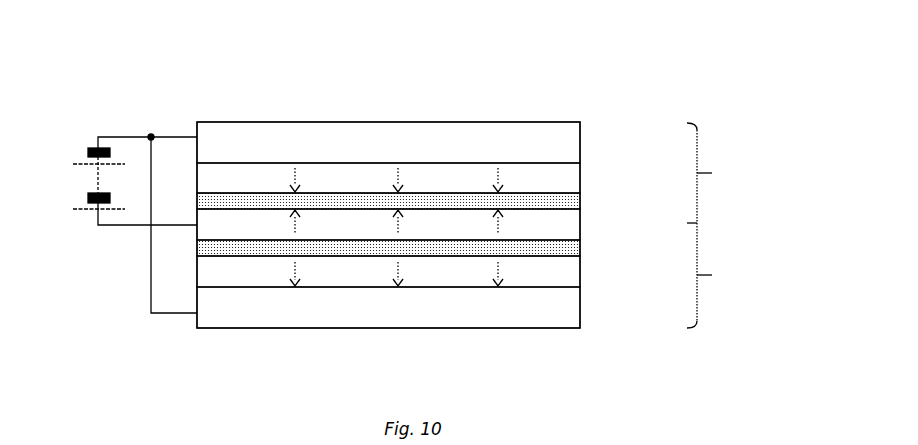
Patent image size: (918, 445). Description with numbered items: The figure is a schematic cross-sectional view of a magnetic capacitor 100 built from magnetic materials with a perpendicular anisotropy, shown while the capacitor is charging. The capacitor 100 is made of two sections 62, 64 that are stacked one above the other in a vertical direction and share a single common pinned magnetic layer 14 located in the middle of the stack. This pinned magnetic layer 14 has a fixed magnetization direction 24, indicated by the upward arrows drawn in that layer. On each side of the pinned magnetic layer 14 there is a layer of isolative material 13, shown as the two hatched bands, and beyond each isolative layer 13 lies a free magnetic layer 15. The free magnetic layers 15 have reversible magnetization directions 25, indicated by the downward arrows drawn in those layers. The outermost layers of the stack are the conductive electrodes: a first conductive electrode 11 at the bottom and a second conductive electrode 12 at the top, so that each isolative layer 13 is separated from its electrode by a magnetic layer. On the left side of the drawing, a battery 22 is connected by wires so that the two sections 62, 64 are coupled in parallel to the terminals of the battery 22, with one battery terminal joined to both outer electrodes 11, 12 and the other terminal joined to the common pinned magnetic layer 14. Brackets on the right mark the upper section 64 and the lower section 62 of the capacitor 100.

The magnetic capacitor 100 is at (600, 93).
The first conductive electrode 11 is at (580, 308).
The second conductive electrode 12 is at (580, 133).
The isolative material layer 13 is at (580, 200).
The pinned magnetic layer 14 is at (580, 225).
The free magnetic layer 15 is at (580, 173).
The battery 22 is at (91, 148).
The fixed magnetization direction 24 is at (293, 210).
The reversible magnetization direction 25 is at (300, 165).
The first section 62 is at (719, 275).
The second section 64 is at (720, 173).